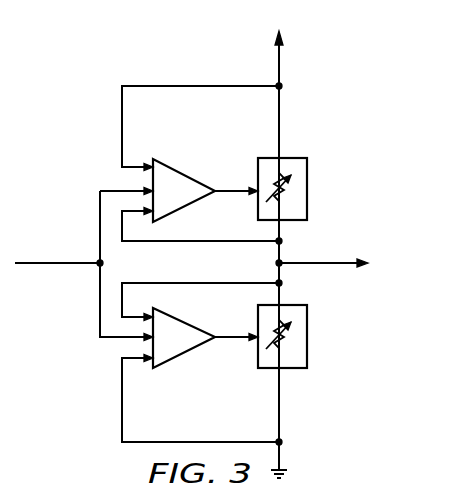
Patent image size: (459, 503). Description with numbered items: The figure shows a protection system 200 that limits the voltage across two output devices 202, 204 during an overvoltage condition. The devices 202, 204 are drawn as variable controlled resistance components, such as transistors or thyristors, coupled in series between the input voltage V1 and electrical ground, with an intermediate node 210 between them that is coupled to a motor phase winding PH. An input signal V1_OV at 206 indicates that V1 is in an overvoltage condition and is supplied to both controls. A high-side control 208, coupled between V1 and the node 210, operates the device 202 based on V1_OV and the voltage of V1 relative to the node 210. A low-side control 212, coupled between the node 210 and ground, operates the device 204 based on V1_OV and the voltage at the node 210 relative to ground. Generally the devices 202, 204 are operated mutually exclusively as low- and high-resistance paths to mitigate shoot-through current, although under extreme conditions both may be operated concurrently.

The protection system 200 is at (172, 62).
The device 202 is at (307, 178).
The device 204 is at (307, 345).
The input signal V1_OV 206 is at (70, 265).
The high-side (HS) control 208 is at (181, 171).
The intermediate node 210 is at (332, 262).
The low-side (LS) control 212 is at (189, 355).